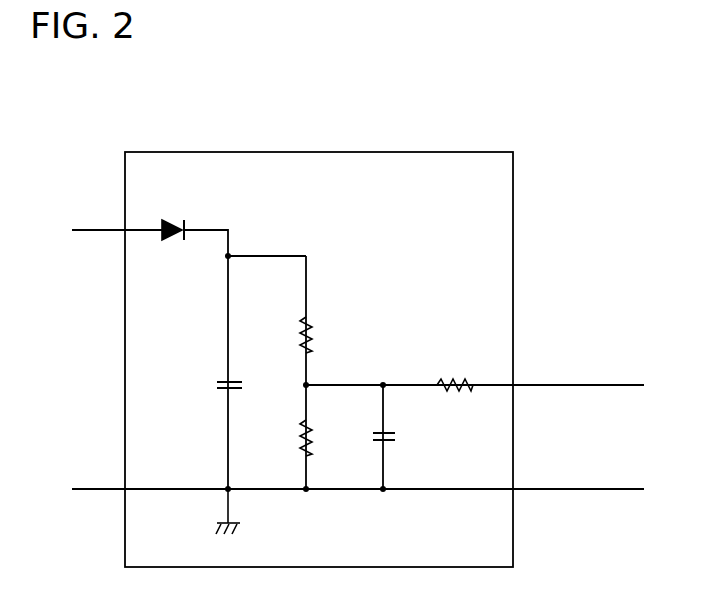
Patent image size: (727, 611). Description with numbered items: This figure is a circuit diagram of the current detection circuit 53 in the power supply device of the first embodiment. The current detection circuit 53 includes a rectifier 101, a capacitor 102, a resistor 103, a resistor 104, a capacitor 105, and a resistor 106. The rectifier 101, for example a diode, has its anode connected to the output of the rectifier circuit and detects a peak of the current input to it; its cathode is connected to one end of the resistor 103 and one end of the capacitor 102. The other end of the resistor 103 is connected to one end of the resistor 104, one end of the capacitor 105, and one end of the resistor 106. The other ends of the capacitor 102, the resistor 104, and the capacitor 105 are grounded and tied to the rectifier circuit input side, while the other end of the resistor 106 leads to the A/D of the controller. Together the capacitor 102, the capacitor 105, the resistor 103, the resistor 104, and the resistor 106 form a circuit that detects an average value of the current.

The current detection circuit 53 is at (281, 152).
The rectifier 101 is at (178, 221).
The capacitor 102 is at (215, 388).
The resistor 103 is at (312, 323).
The resistor 104 is at (312, 445).
The capacitor 105 is at (398, 437).
The resistor 106 is at (446, 381).